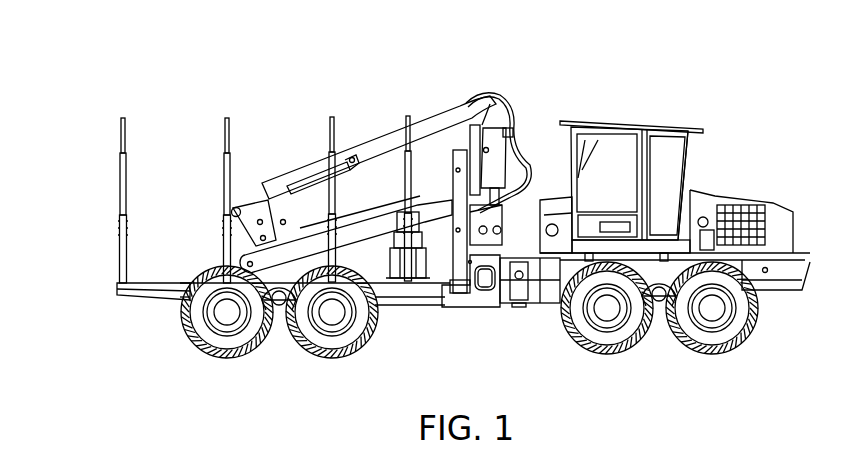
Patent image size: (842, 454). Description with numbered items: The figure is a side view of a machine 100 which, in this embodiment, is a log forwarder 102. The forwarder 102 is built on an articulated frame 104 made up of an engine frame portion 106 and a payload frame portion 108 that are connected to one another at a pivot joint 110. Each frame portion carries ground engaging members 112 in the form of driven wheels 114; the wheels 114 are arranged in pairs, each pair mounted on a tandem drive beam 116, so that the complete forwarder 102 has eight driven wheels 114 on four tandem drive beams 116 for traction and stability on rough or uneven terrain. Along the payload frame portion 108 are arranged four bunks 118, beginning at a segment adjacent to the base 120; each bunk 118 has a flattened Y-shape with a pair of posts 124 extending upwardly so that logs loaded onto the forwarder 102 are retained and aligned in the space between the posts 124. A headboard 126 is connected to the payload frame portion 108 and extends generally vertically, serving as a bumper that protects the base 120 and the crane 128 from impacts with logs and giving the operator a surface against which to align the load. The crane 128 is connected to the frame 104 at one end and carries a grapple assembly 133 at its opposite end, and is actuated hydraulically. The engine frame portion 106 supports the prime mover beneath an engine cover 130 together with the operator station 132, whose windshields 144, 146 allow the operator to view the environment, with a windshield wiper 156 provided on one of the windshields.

The machine 100 is at (636, 77).
The forwarder 102 is at (733, 139).
The articulated frame 104 is at (150, 309).
The engine frame portion 106 is at (782, 289).
The payload frame portion 108 is at (118, 296).
The pivot joint 110 is at (519, 308).
The ground engaging members 112 is at (742, 347).
The driven wheels 114 is at (346, 354).
The tandem drive beam 116 is at (281, 311).
The bunks 118 is at (117, 178).
The base 120 is at (485, 279).
The posts 124 is at (119, 232).
The headboard 126 is at (478, 195).
The crane 128 is at (447, 95).
The engine cover 130 is at (726, 208).
The operator station 132 is at (478, 238).
The grapple assembly 133 is at (398, 261).
The windshield 144 is at (620, 145).
The windshield 146 is at (656, 140).
The windshield wiper 156 is at (579, 145).